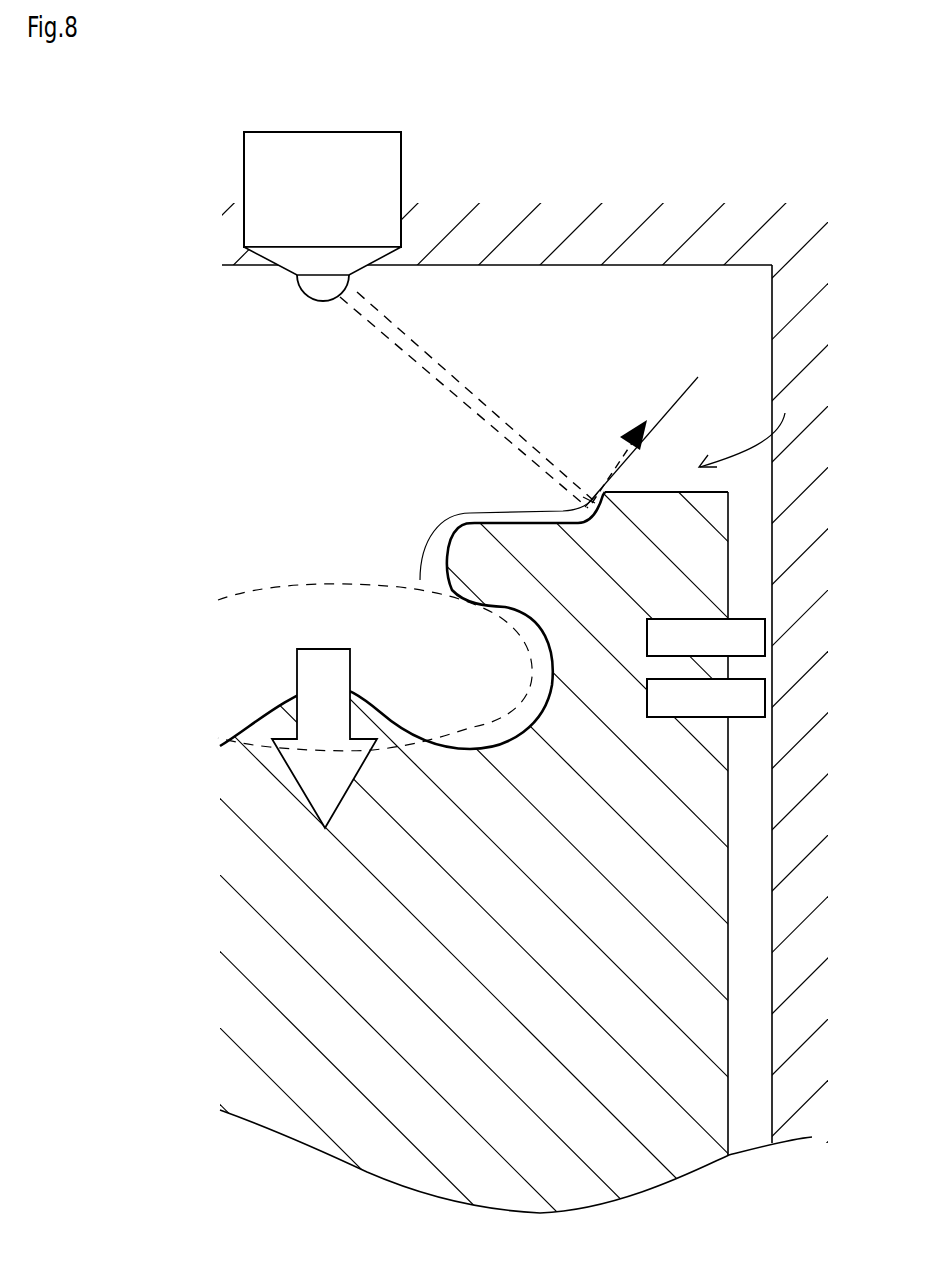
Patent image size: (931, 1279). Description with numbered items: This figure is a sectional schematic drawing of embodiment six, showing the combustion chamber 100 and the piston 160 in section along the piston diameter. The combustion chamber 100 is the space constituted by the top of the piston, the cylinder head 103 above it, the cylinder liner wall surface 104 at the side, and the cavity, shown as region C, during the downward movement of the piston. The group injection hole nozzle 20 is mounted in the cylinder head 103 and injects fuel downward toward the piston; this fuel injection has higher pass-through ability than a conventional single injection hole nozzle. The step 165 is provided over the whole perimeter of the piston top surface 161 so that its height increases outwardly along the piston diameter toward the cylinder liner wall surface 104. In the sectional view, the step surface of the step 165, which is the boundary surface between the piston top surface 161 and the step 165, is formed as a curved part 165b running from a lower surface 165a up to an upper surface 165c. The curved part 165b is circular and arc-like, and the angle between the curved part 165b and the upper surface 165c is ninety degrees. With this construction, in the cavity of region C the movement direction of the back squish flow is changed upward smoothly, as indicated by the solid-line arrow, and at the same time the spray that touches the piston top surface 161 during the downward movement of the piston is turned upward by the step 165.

The group injection hole nozzle 20 is at (401, 188).
The combustion chamber 100 is at (353, 453).
The cylinder head 103 is at (237, 267).
The cylinder liner wall surface 104 is at (771, 315).
The piston 160 is at (526, 843).
The piston top surface 161 is at (771, 401).
The step 165 is at (590, 488).
The lower surface 165a is at (442, 519).
The curved part 165b is at (585, 492).
The upper surface 165c is at (683, 487).
The cavity C is at (375, 660).